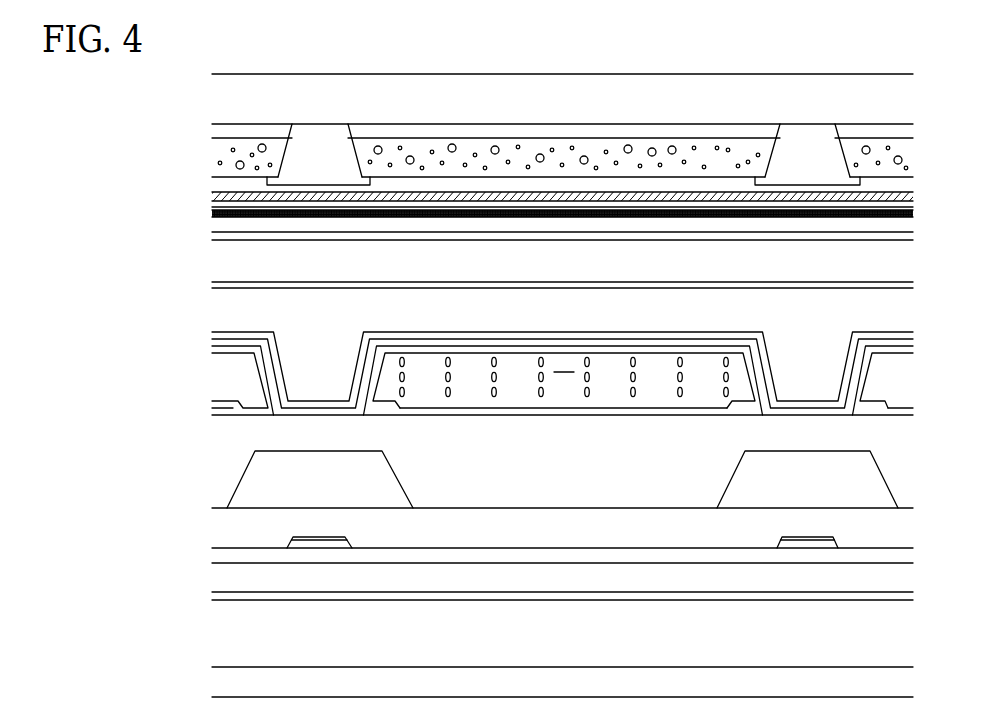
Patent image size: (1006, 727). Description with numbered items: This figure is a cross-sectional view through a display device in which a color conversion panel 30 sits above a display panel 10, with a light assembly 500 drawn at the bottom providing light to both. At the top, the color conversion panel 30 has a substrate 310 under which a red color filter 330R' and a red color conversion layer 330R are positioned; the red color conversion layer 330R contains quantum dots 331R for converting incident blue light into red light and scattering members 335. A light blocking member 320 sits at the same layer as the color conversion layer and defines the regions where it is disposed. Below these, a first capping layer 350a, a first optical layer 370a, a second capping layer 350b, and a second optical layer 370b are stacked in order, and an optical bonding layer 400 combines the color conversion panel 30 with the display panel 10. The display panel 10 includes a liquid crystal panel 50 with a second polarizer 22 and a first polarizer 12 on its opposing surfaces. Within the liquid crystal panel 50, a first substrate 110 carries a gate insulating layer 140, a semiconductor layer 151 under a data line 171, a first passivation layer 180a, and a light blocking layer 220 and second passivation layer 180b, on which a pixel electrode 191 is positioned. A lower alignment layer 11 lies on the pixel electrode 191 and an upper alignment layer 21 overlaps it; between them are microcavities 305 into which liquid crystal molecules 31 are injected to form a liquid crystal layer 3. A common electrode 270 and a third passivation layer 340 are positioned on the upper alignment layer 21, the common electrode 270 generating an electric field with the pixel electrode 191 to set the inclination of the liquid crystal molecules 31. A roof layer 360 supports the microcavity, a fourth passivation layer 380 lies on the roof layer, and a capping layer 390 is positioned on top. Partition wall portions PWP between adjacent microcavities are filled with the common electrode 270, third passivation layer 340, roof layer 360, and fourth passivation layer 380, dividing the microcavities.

The substrate 310 is at (883, 86).
The light blocking member 320 is at (817, 145).
The red color conversion layer 330R is at (562, 106).
The red color filter 330R' is at (562, 86).
The quantum dot 331R is at (717, 145).
The scattering member 335 is at (652, 148).
The first capping layer 350a is at (247, 187).
The first optical layer 370a is at (305, 198).
The second capping layer 350b is at (355, 207).
The second optical layer 370b is at (403, 217).
The optical bonding layer 400 is at (453, 225).
The second polarizer 22 is at (508, 237).
The microcavity 305 is at (563, 371).
The liquid crystal molecules 31 is at (630, 362).
The capping layer 390 is at (907, 259).
The fourth passivation layer 380 is at (907, 283).
The roof layer 360 is at (907, 302).
The third passivation layer 340 is at (901, 332).
The common electrode 270 is at (913, 340).
The upper alignment layer 21 is at (907, 348).
The liquid crystal layer 3 is at (917, 353).
The lower alignment layer 11 is at (912, 404).
The pixel electrode 191 is at (478, 410).
The light blocking layer 220 is at (368, 484).
The second passivation layer 180b is at (532, 477).
The first passivation layer 180a is at (633, 533).
The semiconductor layer 151 is at (302, 549).
The data line 171 is at (336, 541).
The gate insulating layer 140 is at (435, 557).
The first substrate 110 is at (728, 580).
The first polarizer 12 is at (575, 595).
The light assembly 500 is at (905, 680).
The color conversion panel 30 is at (208, 75).
The display panel 10 is at (176, 600).
The liquid crystal panel 50 is at (210, 240).
The partition wall portion PWP is at (328, 347).